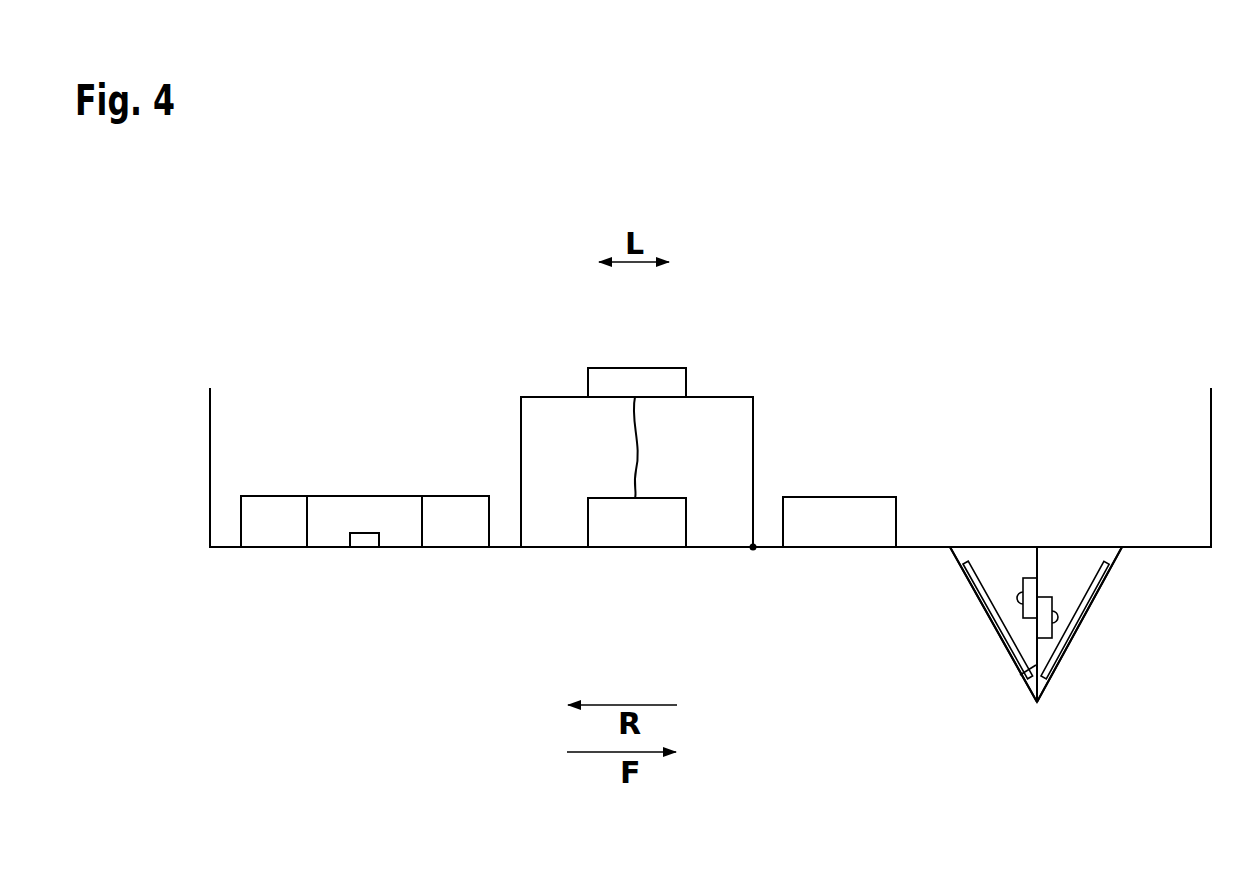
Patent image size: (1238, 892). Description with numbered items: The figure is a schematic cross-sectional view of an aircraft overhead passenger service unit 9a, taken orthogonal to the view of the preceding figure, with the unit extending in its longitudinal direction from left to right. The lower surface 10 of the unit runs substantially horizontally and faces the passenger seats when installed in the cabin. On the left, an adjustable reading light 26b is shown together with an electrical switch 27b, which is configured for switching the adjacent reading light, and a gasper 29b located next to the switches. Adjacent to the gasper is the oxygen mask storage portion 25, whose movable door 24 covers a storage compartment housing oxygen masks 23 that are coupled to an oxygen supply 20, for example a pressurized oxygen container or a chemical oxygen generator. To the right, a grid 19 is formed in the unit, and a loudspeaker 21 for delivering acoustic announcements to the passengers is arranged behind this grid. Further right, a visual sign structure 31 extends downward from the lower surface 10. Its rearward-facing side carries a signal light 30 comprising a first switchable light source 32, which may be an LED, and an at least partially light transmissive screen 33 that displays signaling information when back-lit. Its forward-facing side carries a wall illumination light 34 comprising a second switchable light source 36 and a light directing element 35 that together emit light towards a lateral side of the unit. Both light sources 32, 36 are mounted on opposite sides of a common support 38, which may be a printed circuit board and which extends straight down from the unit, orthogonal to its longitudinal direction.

The aircraft overhead passenger service unit 9a is at (1162, 254).
The lower surface 10 is at (502, 549).
The grid 19 is at (821, 574).
The oxygen supply 20 is at (654, 383).
The loudspeaker 21 is at (866, 483).
The oxygen masks 23 is at (642, 536).
The movable door 24 is at (560, 549).
The oxygen mask storage portion 25 is at (743, 373).
The adjustable reading light 26b is at (281, 480).
The electrical switch 27b is at (361, 523).
The gasper 29b is at (464, 480).
The signal light 30 is at (987, 651).
The visual sign structure 31 is at (997, 710).
The first switchable light source 32 is at (1029, 577).
The at least partially light transmissive screen 33 is at (972, 605).
The wall illumination light 34 is at (1073, 687).
The light directing element 35 is at (1102, 605).
The second switchable light source 36 is at (1046, 596).
The common support 38 is at (1019, 681).